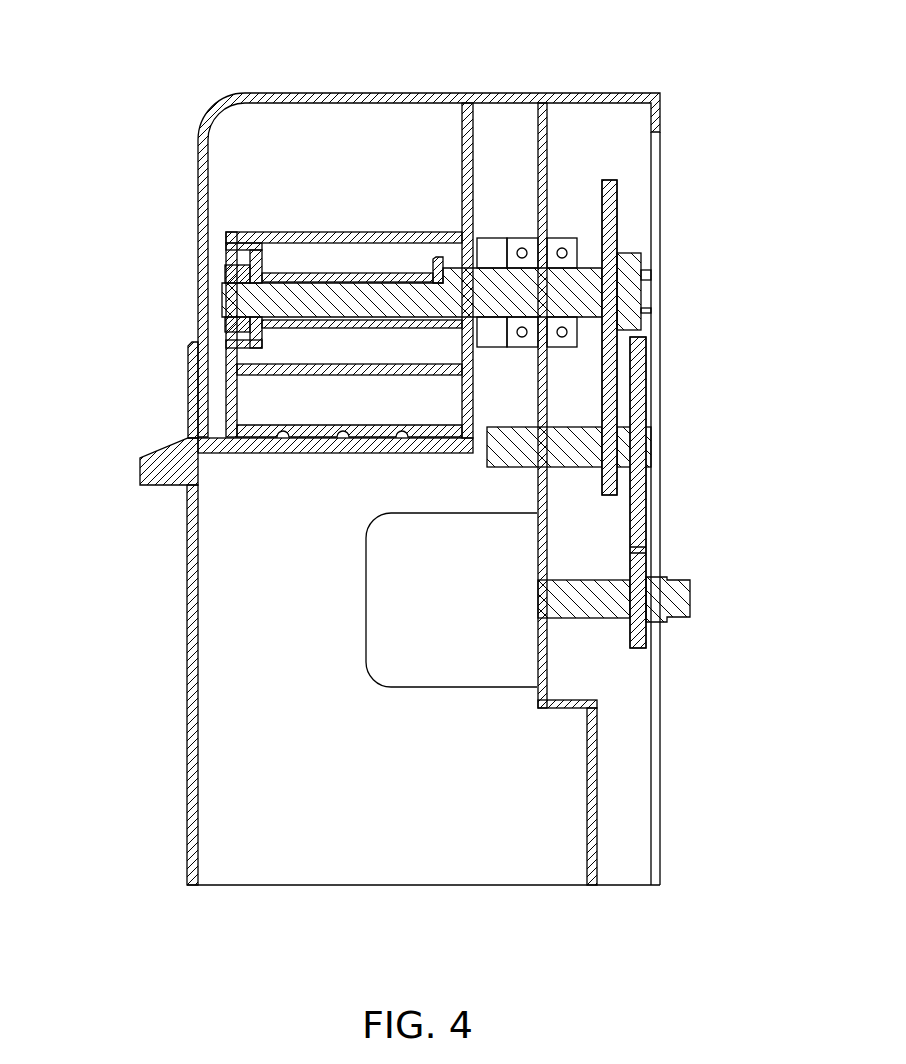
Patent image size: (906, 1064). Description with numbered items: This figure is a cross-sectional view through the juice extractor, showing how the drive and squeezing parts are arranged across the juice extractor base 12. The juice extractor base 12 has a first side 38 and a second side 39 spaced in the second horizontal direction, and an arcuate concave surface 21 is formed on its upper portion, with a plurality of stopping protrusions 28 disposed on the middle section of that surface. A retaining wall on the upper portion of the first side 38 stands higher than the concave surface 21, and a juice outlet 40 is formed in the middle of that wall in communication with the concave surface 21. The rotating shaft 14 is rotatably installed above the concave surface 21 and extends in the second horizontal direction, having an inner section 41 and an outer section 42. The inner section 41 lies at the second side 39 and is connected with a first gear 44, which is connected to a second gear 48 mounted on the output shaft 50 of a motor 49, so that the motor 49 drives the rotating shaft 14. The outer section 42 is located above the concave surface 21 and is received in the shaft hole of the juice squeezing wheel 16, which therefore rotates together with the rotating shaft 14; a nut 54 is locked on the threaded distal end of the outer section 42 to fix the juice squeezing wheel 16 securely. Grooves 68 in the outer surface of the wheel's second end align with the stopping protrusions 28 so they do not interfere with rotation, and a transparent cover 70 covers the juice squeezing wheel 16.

The juice extractor base 12 is at (660, 745).
The rotating shaft 14 is at (387, 297).
The juice squeezing wheel 16 is at (305, 232).
The arcuate concave surface 21 is at (250, 447).
The stopping protrusions 28 is at (280, 436).
The first side 38 is at (192, 857).
The second side 39 is at (653, 845).
The juice outlet 40 is at (163, 468).
The inner section 41 is at (590, 288).
The outer section 42 is at (227, 297).
The first gear 44 is at (618, 200).
The second gear 48 is at (648, 555).
The motor 49 is at (465, 688).
The output shaft 50 is at (680, 606).
The nut 54 is at (228, 322).
The grooves 68 is at (337, 433).
The transparent cover 70 is at (282, 97).